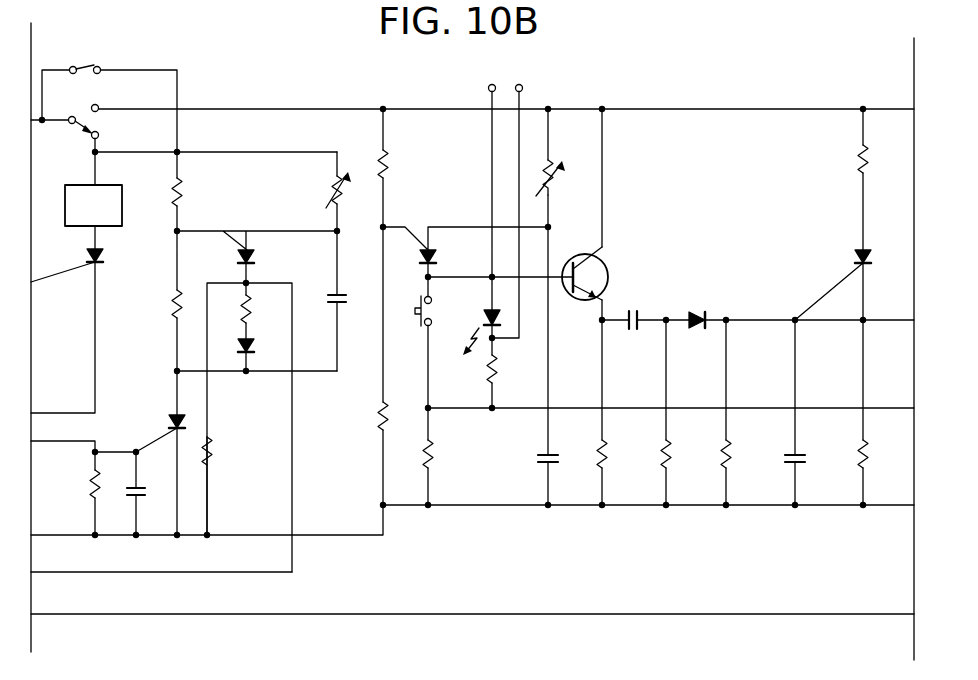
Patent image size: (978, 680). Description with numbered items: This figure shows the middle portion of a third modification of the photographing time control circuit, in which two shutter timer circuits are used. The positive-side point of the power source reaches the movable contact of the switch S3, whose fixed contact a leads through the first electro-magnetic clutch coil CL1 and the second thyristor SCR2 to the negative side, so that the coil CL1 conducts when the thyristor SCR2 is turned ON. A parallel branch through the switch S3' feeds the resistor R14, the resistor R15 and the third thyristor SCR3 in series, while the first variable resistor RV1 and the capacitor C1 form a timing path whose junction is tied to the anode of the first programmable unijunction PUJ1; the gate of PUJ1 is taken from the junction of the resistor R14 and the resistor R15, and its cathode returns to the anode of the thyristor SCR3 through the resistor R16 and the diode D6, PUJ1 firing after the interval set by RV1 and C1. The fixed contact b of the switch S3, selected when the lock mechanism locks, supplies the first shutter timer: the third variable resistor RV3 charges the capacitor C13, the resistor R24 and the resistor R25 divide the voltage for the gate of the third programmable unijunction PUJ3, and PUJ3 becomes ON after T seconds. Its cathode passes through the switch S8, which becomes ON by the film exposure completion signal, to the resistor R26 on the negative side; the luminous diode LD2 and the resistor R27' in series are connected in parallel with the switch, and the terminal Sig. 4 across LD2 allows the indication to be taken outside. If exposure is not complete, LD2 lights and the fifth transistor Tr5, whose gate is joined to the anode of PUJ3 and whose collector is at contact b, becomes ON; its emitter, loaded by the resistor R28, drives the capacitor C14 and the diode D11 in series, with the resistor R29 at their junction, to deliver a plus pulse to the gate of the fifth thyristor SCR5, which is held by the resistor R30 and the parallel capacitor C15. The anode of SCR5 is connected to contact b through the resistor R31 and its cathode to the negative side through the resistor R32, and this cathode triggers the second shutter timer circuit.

The switch S3' is at (88, 56).
The switch S3 is at (70, 107).
The fixed contact b is at (102, 98).
The fixed contact a is at (103, 136).
The first electro-magnetic clutch coil CL1 is at (86, 195).
The second thyristor SCR2 is at (122, 262).
The resistor R14 is at (198, 192).
The first programmable unijunction PUJ1 is at (240, 234).
The first variable resistor RV1 is at (322, 190).
The capacitor C1 is at (352, 299).
The resistor R15 is at (157, 306).
The resistor R16 is at (267, 308).
The diode D6 is at (262, 349).
The third thyristor SCR3 is at (149, 410).
The resistor R24 is at (404, 164).
The third programmable unijunction PUJ3 is at (417, 234).
The terminal Sig. 4 is at (509, 75).
The switch S8 is at (411, 306).
The luminous diode LD2 is at (472, 320).
The resistor R27' is at (516, 369).
The resistor R25 is at (362, 419).
The resistor R26 is at (449, 454).
The capacitor C13 is at (530, 462).
The third variable resistor RV3 is at (565, 181).
The fifth transistor Tr5 is at (602, 273).
The capacitor C14 is at (639, 310).
The diode D11 is at (698, 308).
The resistor R28 is at (624, 454).
The resistor R29 is at (686, 454).
The resistor R30 is at (746, 454).
The capacitor C15 is at (816, 453).
The resistor R32 is at (883, 454).
The resistor R31 is at (841, 159).
The fifth thyristor SCR5 is at (834, 246).